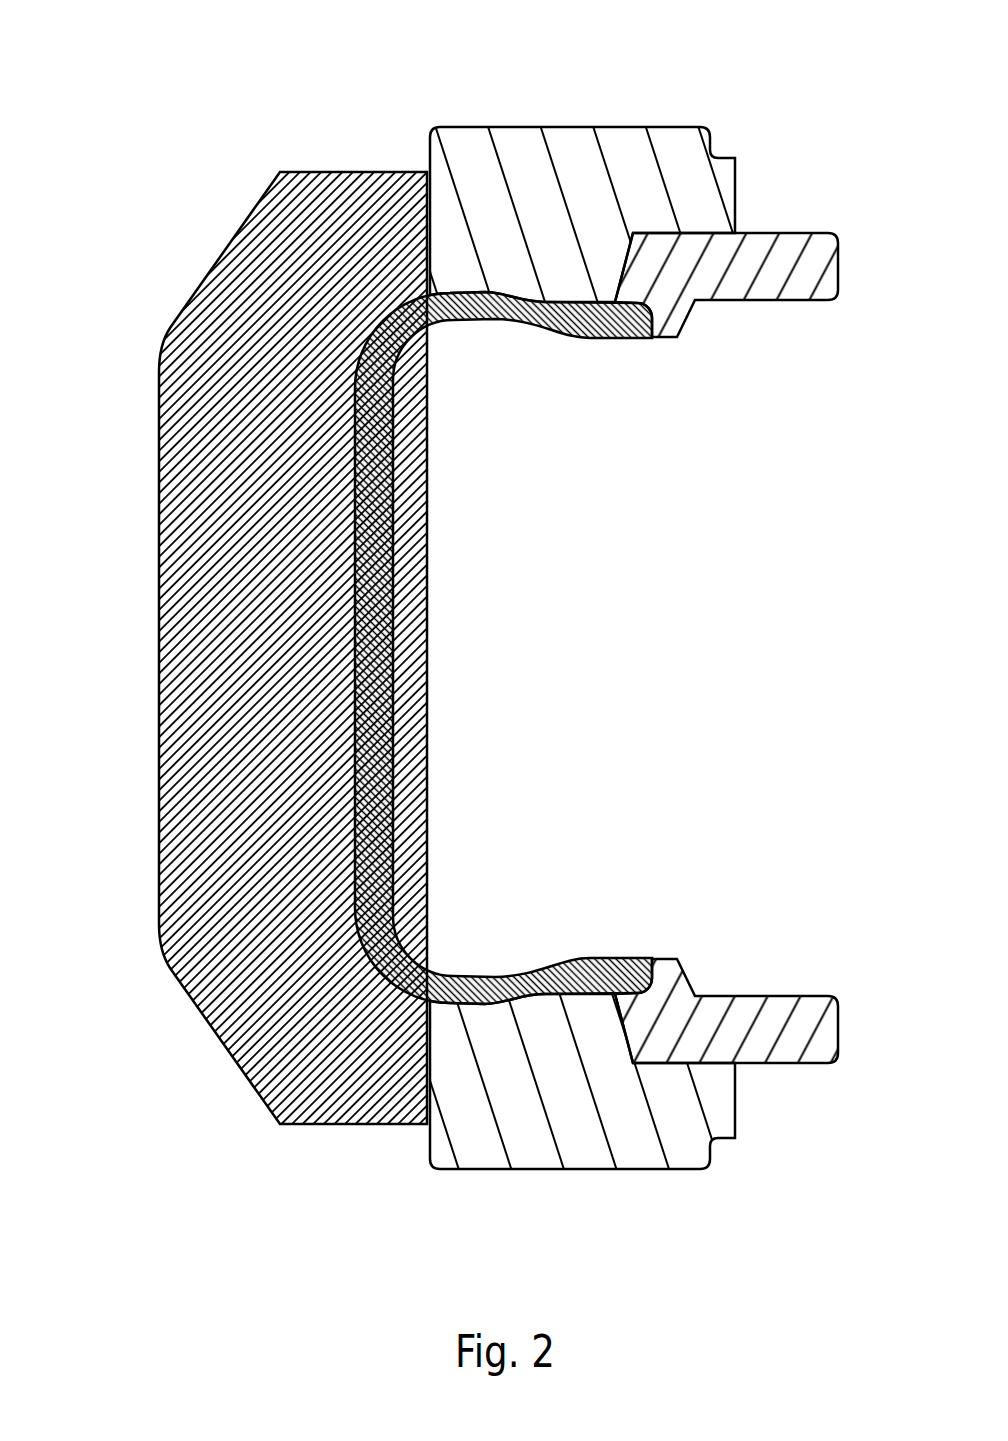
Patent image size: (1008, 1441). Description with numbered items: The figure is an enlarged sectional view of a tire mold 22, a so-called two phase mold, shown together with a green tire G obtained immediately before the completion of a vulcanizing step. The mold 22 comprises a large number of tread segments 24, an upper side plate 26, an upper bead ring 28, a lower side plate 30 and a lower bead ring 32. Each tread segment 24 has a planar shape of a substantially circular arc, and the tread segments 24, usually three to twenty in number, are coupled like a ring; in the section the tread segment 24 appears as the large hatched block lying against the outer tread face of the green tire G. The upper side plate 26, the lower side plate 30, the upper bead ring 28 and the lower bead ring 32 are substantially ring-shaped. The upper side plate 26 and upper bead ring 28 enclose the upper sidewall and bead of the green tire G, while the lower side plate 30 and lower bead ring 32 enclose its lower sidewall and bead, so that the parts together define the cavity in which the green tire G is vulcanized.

The mold 22 is at (350, 157).
The tread segment 24 is at (210, 590).
The upper side plate 26 is at (517, 148).
The upper bead ring 28 is at (793, 282).
The lower side plate 30 is at (567, 1155).
The lower bead ring 32 is at (798, 1013).
The green tire G is at (380, 532).